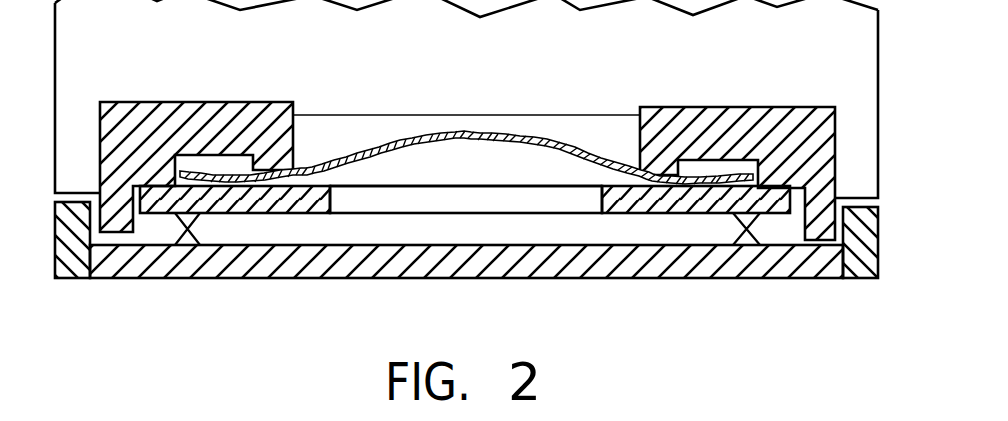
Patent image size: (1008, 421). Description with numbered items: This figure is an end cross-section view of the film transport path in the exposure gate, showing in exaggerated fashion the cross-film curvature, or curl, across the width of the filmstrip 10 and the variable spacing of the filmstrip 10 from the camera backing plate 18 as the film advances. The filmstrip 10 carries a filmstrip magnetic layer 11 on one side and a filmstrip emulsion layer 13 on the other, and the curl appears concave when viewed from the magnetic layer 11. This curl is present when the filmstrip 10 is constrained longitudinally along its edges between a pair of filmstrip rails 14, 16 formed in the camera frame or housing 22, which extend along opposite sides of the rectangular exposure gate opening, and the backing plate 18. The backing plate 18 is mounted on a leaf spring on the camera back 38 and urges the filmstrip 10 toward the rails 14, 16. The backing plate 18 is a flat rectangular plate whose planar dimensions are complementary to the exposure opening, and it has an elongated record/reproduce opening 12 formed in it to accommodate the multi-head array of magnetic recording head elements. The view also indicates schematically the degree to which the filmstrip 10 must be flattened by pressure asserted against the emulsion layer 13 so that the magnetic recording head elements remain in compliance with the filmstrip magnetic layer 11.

The filmstrip 10 is at (467, 195).
The filmstrip magnetic layer 11 is at (627, 187).
The elongated record/reproduce opening 12 is at (440, 222).
The filmstrip emulsion layer 13 is at (503, 131).
The filmstrip rail 14 is at (295, 168).
The filmstrip rail 16 is at (640, 168).
The camera backing plate 18 is at (712, 204).
The camera frame or housing 22 is at (122, 40).
The camera back 38 is at (513, 273).